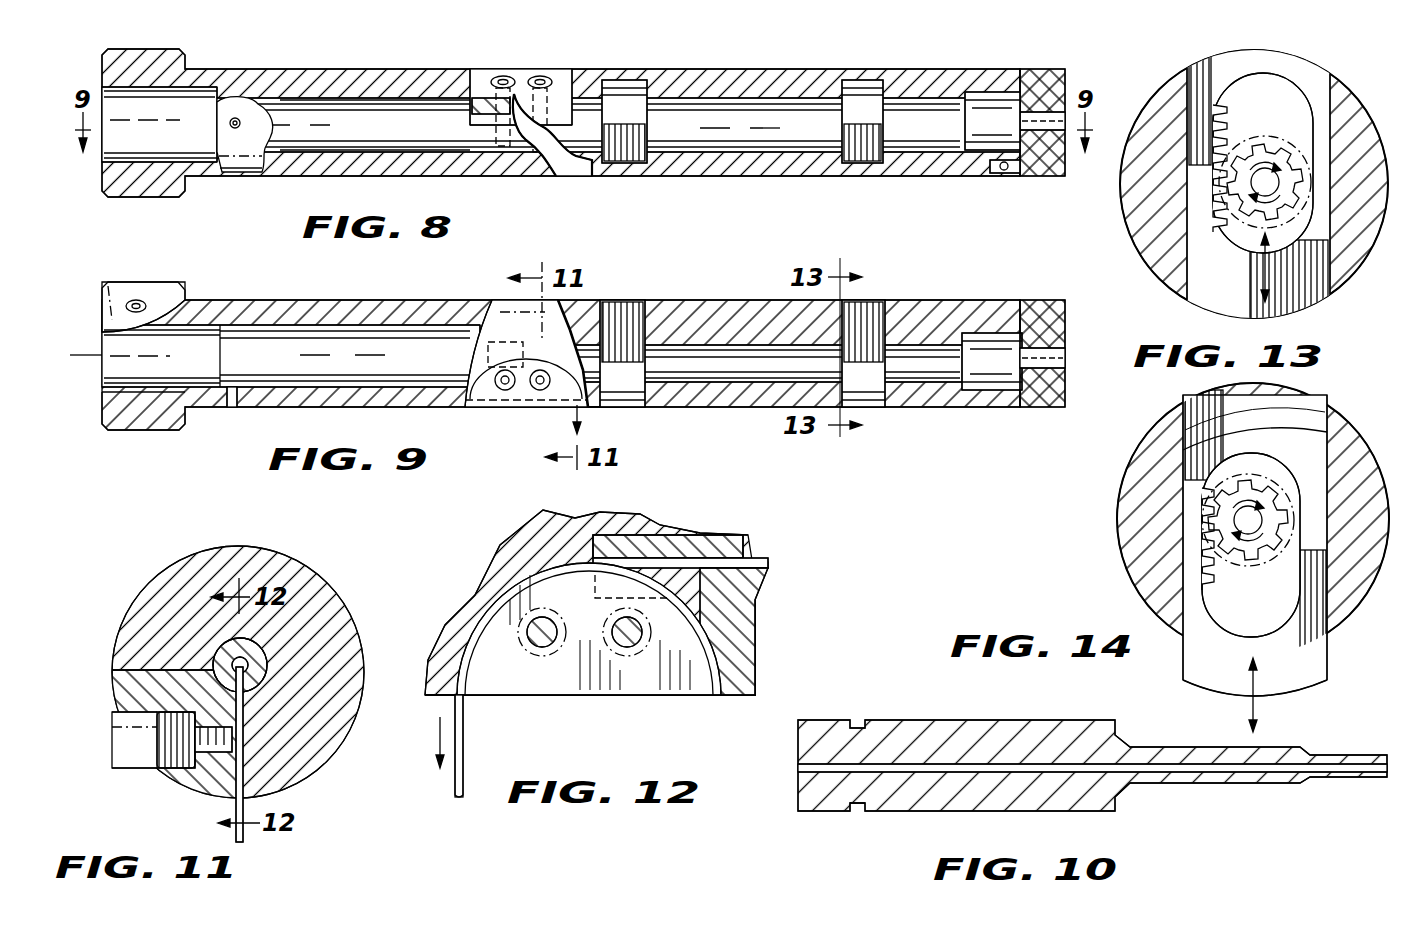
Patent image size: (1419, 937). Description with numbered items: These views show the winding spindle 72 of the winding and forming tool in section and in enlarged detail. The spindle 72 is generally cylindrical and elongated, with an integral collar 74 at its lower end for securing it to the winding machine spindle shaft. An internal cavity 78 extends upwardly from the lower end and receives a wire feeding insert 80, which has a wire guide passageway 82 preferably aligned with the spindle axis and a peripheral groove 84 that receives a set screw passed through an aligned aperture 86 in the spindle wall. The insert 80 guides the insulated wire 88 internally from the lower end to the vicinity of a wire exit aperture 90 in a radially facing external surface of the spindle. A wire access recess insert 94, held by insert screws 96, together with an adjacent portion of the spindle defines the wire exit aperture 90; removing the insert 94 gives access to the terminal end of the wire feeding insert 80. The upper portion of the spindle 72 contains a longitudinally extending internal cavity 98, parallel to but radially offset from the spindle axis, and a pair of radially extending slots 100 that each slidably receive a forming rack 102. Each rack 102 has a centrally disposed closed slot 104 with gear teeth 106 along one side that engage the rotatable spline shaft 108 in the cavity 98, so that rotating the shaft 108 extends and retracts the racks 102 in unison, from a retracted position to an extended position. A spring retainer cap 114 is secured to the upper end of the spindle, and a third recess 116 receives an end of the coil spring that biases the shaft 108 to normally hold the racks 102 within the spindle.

In FIG. 8, the winding spindle 72 is at (287, 70).
In FIG. 9, the winding spindle 72 is at (279, 302).
In FIG. 11, the winding spindle 72 is at (238, 678).
In FIG. 12, the winding spindle 72 is at (596, 602).
In FIG. 13, the winding spindle 72 is at (1378, 262).
In FIG. 14, the winding spindle 72 is at (1384, 566).
In FIG. 9, the integral collar 74 is at (122, 430).
In FIG. 8, the internal cavity 78 is at (365, 115).
In FIG. 9, the internal cavity 78 is at (268, 385).
In FIG. 8, the wire feeding insert 80 is at (532, 124).
In FIG. 9, the wire feeding insert 80 is at (532, 356).
In FIG. 10, the wire feeding insert 80 is at (920, 712).
In FIG. 11, the wire feeding insert 80 is at (266, 670).
In FIG. 10, the wire guide passageway 82 is at (985, 772).
In FIG. 10, the peripheral groove 84 is at (858, 811).
In FIG. 8, the aligned aperture 86 is at (237, 118).
In FIG. 9, the aligned aperture 86 is at (232, 407).
In FIG. 12, the insulated wire 88 is at (464, 760).
In FIG. 8, the wire exit aperture 90 is at (552, 135).
In FIG. 9, the wire exit aperture 90 is at (592, 408).
In FIG. 12, the wire exit aperture 90 is at (464, 705).
In FIG. 8, the wire access recess insert 94 is at (568, 90).
In FIG. 9, the wire access recess insert 94 is at (482, 407).
In FIG. 11, the wire access recess insert 94 is at (190, 792).
In FIG. 12, the wire access recess insert 94 is at (650, 690).
In FIG. 9, the insert screws 96 is at (540, 392).
In FIG. 11, the insert screws 96 is at (155, 740).
In FIG. 8, the longitudinally extending internal cavity 98 is at (918, 115).
In FIG. 9, the longitudinally extending internal cavity 98 is at (925, 350).
In FIG. 9, the radially extending slots 100 is at (875, 402).
In FIG. 14, the radially extending slots 100 is at (1318, 415).
In FIG. 13, the forming rack 102 is at (1212, 285).
In FIG. 14, the forming rack 102 is at (1328, 670).
In FIG. 13, the closed slot 104 is at (1302, 95).
In FIG. 14, the closed slot 104 is at (1295, 600).
In FIG. 13, the gear teeth 106 is at (1235, 120).
In FIG. 14, the gear teeth 106 is at (1225, 482).
In FIG. 13, the spline shaft 108 is at (1300, 170).
In FIG. 14, the spline shaft 108 is at (1285, 512).
In FIG. 8, the spring retainer cap 114 is at (1047, 69).
In FIG. 9, the spring retainer cap 114 is at (1044, 407).
In FIG. 8, the third recess 116 is at (1004, 176).